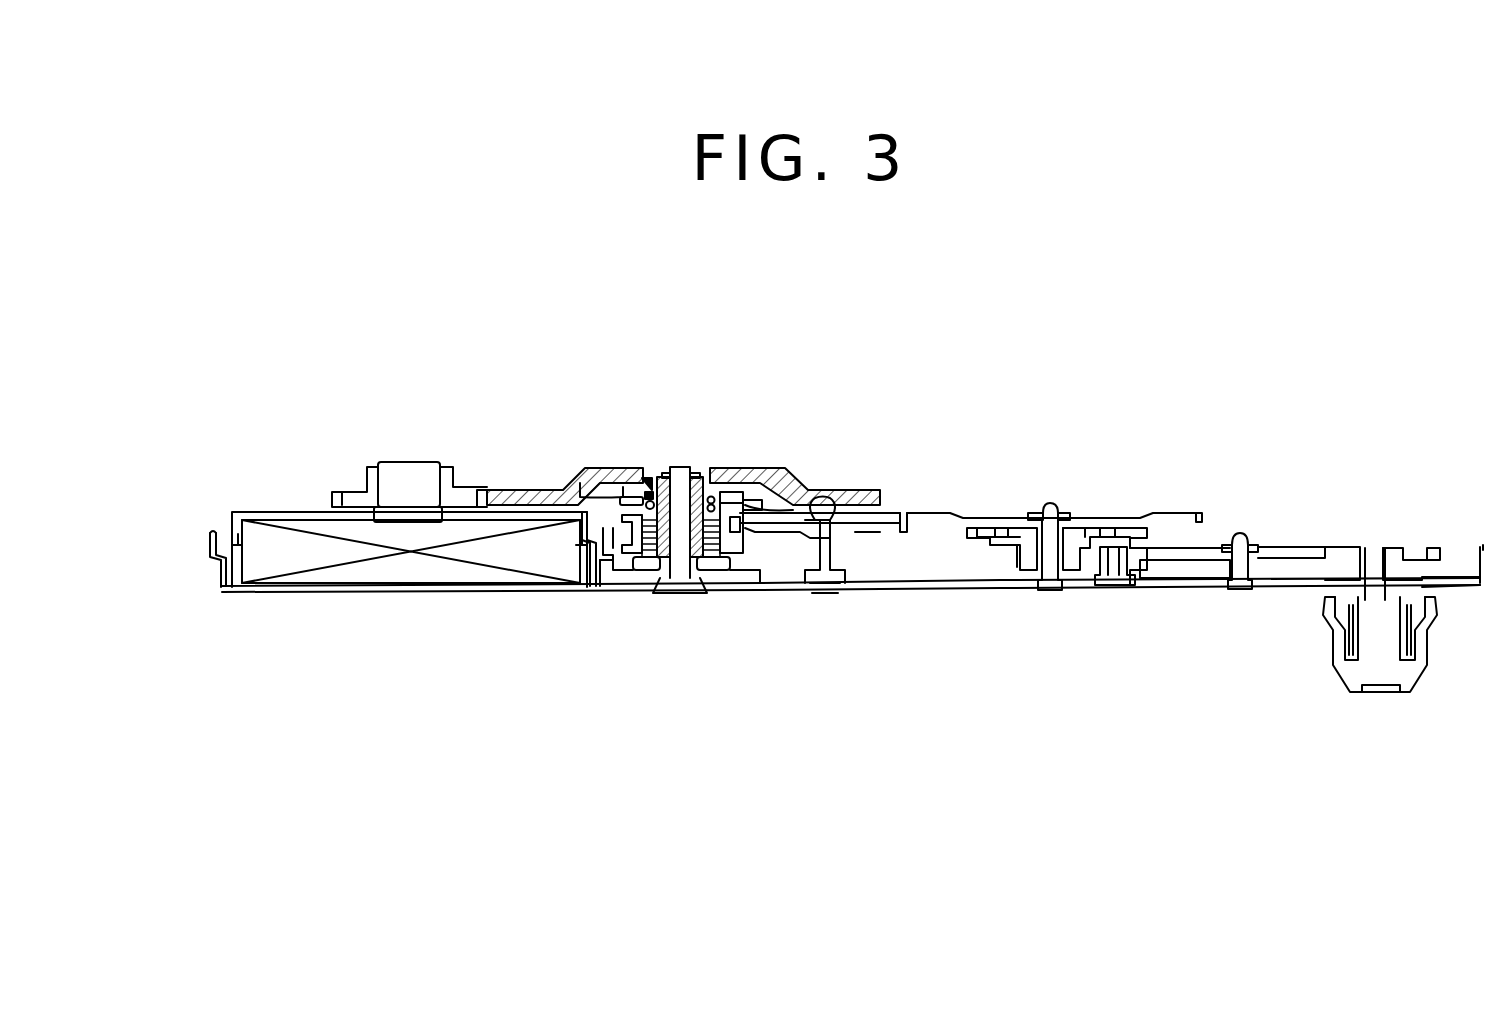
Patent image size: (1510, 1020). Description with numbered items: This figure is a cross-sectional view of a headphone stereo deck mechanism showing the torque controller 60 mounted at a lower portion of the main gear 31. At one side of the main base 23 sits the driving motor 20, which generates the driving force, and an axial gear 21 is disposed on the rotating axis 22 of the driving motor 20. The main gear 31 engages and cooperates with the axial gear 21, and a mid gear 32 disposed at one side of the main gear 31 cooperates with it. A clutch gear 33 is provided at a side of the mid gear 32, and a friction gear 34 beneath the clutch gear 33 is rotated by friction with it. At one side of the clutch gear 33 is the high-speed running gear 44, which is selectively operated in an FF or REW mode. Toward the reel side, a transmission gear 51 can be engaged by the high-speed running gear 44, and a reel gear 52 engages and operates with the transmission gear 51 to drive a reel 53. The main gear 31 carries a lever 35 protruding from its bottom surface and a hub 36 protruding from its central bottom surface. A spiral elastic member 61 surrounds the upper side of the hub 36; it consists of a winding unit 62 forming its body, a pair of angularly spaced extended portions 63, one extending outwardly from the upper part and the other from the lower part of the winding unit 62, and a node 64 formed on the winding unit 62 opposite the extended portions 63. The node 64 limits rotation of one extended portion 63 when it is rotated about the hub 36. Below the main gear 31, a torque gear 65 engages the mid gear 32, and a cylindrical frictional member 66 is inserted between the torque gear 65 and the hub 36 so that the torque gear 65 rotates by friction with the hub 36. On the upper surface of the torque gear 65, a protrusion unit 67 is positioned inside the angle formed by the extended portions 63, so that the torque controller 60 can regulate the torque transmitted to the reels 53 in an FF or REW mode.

The driving motor 20 is at (348, 572).
The axial gear 21 is at (355, 492).
The rotating axis 22 is at (414, 497).
The main base 23 is at (218, 593).
The main gear 31 is at (773, 472).
The mid gear 32 is at (880, 527).
The clutch gear 33 is at (928, 513).
The friction gear 34 is at (1000, 540).
The lever 35 is at (800, 492).
The hub 36 is at (698, 542).
The high-speed running gear 44 is at (1140, 563).
The transmission gear 51 is at (1289, 553).
The reel gear 52 is at (1407, 548).
The reel 53 is at (1355, 680).
The torque controller 60 is at (737, 560).
The spiral elastic member 61 is at (643, 478).
The winding unit 62 is at (712, 475).
The extended portions 63 is at (738, 487).
The node 64 is at (596, 468).
The torque gear 65 is at (622, 560).
The cylindrical frictional member 66 is at (648, 548).
The protrusion unit 67 is at (735, 490).